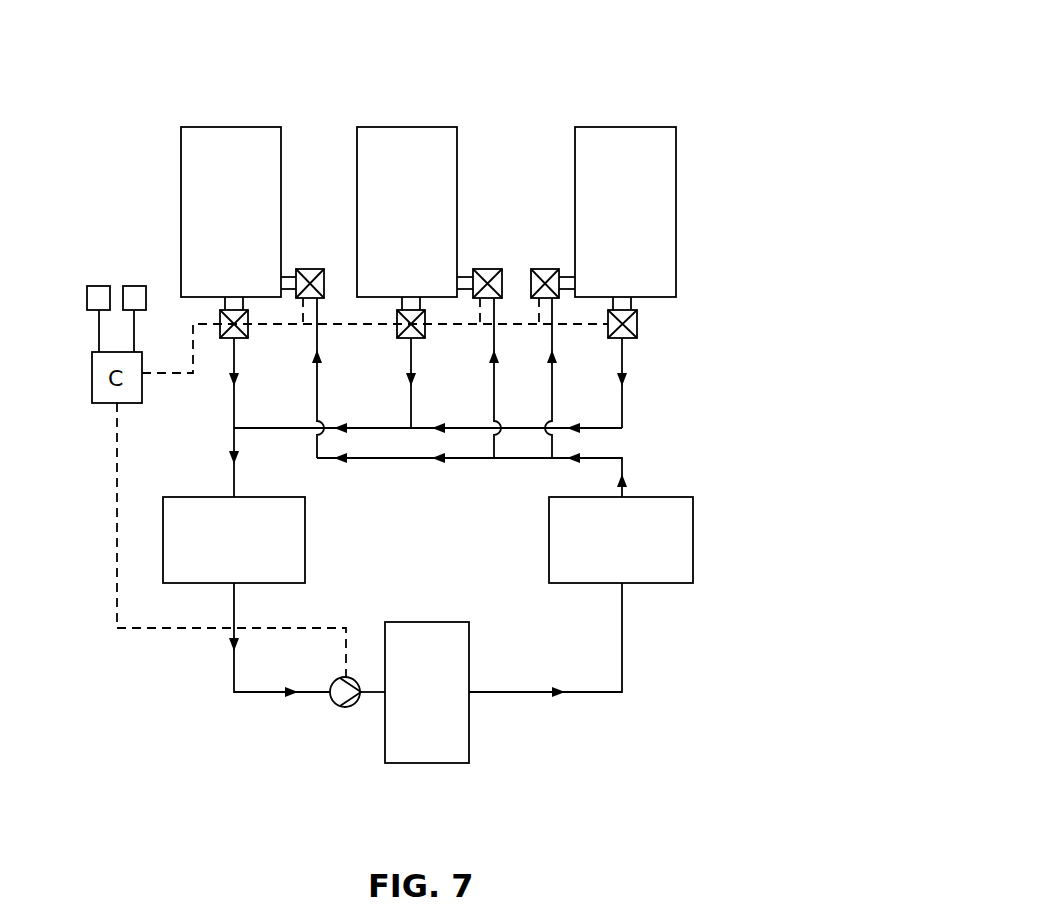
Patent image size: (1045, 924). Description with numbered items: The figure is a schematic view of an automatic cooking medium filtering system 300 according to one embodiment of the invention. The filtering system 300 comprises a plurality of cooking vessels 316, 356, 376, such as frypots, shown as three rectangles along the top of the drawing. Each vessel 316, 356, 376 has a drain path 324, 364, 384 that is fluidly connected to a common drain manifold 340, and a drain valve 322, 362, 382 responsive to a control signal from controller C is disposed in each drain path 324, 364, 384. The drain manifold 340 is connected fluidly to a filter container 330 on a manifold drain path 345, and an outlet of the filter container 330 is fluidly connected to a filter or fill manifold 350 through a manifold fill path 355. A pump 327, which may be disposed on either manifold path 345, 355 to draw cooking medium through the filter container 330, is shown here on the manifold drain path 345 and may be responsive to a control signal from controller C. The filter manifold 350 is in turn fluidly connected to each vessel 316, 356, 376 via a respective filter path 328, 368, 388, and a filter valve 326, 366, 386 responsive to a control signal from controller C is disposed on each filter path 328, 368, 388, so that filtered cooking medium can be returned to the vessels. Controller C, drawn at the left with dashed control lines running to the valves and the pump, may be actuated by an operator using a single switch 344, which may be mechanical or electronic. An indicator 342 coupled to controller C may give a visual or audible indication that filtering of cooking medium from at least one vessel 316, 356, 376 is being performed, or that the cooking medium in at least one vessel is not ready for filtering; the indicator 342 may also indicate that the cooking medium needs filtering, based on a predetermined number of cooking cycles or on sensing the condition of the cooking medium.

The filtering system 300 is at (145, 88).
The cooking vessel 316 is at (261, 132).
The cooking vessel 356 is at (438, 132).
The cooking vessel 376 is at (654, 132).
The drain valve 322 is at (220, 319).
The drain valve 362 is at (397, 337).
The drain valve 382 is at (637, 324).
The filter valve 326 is at (312, 268).
The filter valve 366 is at (484, 268).
The filter valve 386 is at (544, 268).
The drain path 324 is at (234, 403).
The drain path 364 is at (411, 397).
The drain path 384 is at (622, 408).
The filter path 328 is at (317, 388).
The filter path 368 is at (494, 387).
The filter path 388 is at (552, 397).
The drain manifold 340 is at (305, 539).
The filter manifold 350 is at (693, 539).
The filter container 330 is at (469, 750).
The pump 327 is at (334, 707).
The manifold drain path 345 is at (234, 673).
The manifold fill path 355 is at (622, 661).
The indicator 342 is at (97, 286).
The single switch 344 is at (134, 286).